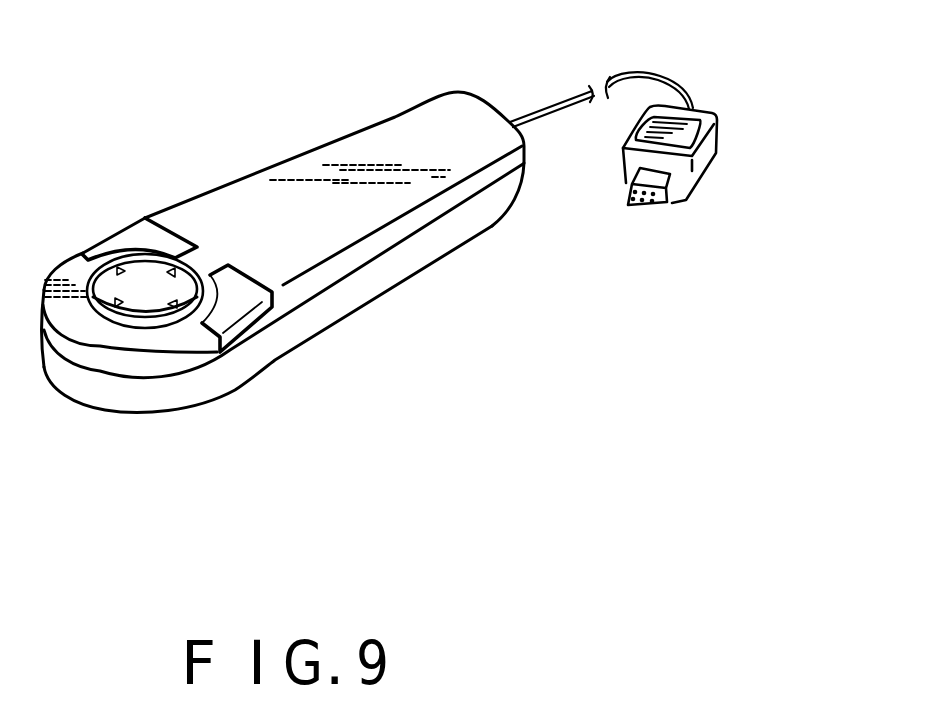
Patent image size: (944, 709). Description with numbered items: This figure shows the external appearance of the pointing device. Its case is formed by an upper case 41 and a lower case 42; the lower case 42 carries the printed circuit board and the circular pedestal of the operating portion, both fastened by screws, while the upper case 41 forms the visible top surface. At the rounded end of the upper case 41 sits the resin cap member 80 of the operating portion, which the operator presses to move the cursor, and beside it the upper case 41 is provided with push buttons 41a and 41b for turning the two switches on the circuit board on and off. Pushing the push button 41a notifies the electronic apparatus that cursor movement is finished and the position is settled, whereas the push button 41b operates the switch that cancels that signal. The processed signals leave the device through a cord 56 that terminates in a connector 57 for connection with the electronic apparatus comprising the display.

The upper case 41 is at (432, 110).
The lower case 42 is at (443, 247).
The push button 41a is at (252, 320).
The push button 41b is at (112, 248).
The cap member 80 is at (143, 273).
The cord 56 is at (541, 112).
The connector 57 is at (700, 200).